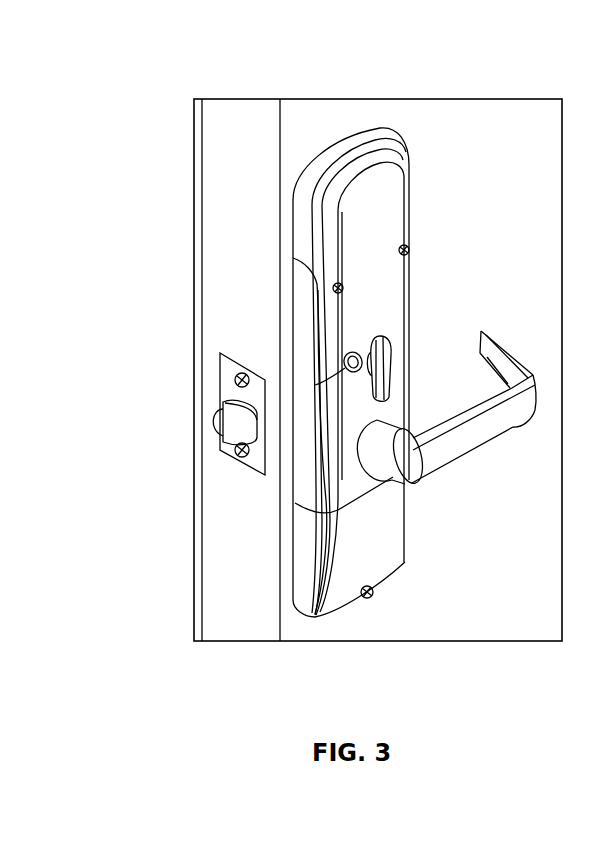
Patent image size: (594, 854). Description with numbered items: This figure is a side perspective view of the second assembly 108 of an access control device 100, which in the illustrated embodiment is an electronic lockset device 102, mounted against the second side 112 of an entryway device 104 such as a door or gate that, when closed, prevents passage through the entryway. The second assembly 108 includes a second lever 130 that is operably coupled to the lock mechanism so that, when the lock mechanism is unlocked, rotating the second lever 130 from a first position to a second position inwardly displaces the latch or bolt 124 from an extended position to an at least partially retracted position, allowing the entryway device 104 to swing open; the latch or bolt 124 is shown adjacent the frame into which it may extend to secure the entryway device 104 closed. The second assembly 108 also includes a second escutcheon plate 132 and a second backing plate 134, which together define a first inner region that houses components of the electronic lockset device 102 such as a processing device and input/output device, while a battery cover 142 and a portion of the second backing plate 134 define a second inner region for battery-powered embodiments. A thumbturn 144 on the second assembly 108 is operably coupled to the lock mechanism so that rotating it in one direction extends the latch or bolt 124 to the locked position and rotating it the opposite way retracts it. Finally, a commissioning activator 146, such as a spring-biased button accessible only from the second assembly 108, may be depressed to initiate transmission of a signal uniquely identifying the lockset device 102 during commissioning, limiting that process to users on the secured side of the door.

The access control device 100 is at (333, 334).
The electronic lockset device 102 is at (333, 334).
The entryway device 104 is at (240, 170).
The second assembly 108 is at (388, 195).
The second side 112 is at (300, 628).
The latch or bolt 124 is at (227, 428).
The second lever 130 is at (450, 452).
The second escutcheon plate 132 is at (383, 292).
The second backing plate 134 is at (304, 491).
The battery cover 142 is at (383, 555).
The thumbturn 144 is at (387, 370).
The commissioning activator 146 is at (362, 366).